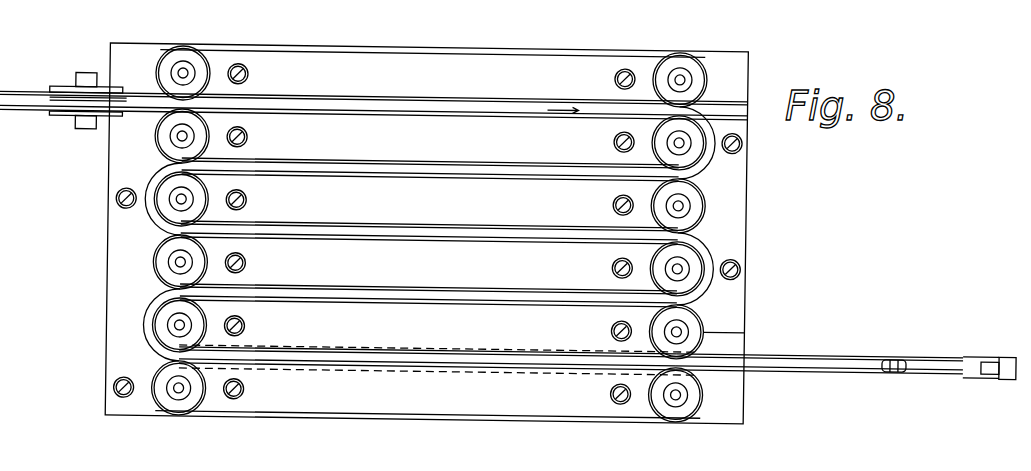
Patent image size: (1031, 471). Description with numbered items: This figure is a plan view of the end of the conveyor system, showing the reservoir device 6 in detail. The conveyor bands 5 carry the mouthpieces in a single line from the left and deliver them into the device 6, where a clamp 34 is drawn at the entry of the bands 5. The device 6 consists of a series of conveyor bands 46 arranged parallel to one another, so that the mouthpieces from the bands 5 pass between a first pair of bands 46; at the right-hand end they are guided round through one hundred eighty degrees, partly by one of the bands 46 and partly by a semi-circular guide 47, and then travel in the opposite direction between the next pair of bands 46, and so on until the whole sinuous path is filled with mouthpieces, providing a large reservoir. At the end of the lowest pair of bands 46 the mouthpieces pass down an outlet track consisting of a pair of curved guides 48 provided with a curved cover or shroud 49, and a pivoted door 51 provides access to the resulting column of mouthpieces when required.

The device 6 is at (395, 42).
The conveyor bands 5 is at (28, 98).
The clamp 34 is at (61, 90).
The conveyor bands 46 is at (586, 115).
The semi-circular guide 47 is at (700, 163).
The curved guides 48 is at (795, 376).
The curved cover or shroud 49 is at (925, 366).
The pivoted door 51 is at (1022, 360).